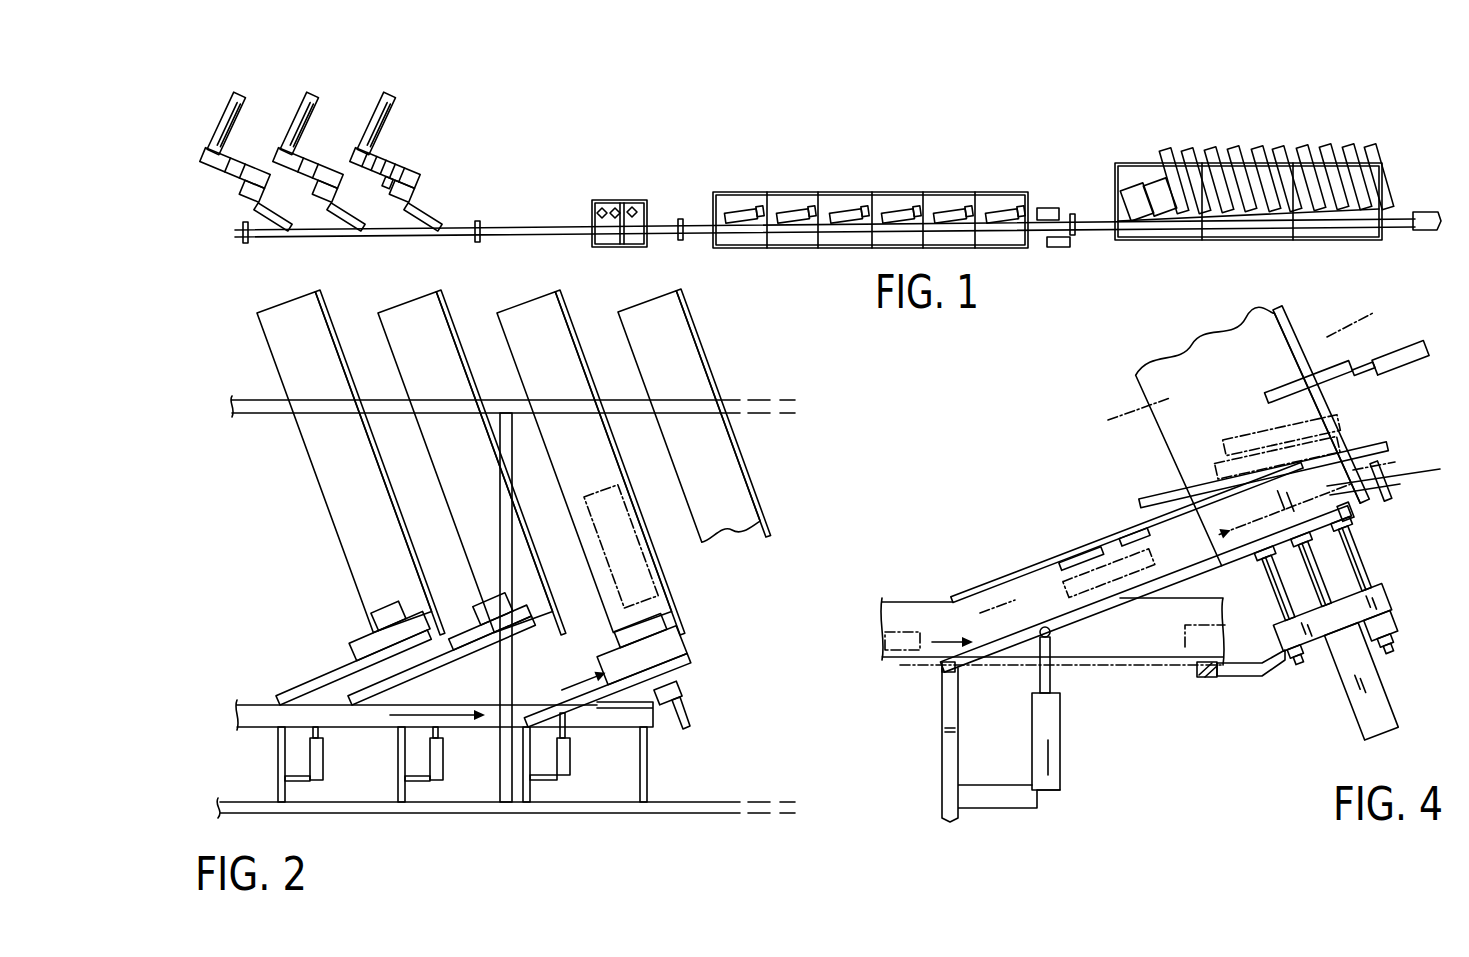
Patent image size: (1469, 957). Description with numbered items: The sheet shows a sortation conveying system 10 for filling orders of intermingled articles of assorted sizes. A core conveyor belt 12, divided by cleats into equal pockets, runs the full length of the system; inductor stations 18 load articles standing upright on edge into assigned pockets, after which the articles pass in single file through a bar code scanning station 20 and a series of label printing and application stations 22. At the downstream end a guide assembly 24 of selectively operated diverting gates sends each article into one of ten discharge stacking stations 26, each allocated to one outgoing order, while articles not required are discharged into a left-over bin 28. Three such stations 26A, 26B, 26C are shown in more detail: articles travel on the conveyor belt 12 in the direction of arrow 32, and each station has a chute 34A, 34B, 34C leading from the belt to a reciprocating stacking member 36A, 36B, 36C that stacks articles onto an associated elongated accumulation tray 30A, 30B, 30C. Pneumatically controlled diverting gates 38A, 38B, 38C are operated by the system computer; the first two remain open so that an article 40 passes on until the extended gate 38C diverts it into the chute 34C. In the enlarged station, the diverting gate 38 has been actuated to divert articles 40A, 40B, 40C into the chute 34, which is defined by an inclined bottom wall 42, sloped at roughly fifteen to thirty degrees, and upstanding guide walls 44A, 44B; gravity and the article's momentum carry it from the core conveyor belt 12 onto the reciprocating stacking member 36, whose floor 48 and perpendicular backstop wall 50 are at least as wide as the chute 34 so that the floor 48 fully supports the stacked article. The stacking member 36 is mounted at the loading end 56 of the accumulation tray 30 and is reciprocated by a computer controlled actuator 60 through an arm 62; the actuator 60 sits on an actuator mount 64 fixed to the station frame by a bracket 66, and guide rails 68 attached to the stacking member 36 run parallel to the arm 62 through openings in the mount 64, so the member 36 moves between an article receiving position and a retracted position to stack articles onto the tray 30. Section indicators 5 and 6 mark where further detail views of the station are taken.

In FIG. 4, the section line 5 is at (1003, 605).
In FIG. 4, the section line 6 is at (1111, 410).
In FIG. 1, the sortation conveying system 10 is at (542, 135).
In FIG. 1, the core conveyor belt 12 is at (536, 227).
In FIG. 2, the core conveyor belt 12 is at (255, 730).
In FIG. 4, the core conveyor belt 12 is at (880, 612).
In FIG. 1, the inductor stations 18 is at (207, 151).
In FIG. 1, the bar code scanning station 20 is at (620, 200).
In FIG. 1, the label printing and application stations 22 is at (849, 189).
In FIG. 1, the guide assembly 24 is at (1174, 233).
In FIG. 1, the discharge stacking stations 26 is at (1208, 147).
In FIG. 4, the discharge stacking stations 26 is at (1036, 431).
In FIG. 2, the discharge stacking station 26A is at (328, 680).
In FIG. 2, the discharge stacking station 26B is at (467, 663).
In FIG. 2, the discharge stacking station 26C is at (660, 597).
In FIG. 1, the left-over bin 28 is at (1122, 190).
In FIG. 4, the elongated accumulation tray 30 is at (1263, 327).
In FIG. 2, the elongated accumulation tray 30A is at (343, 533).
In FIG. 2, the elongated accumulation tray 30B is at (457, 518).
In FIG. 2, the elongated accumulation tray 30C is at (557, 480).
In FIG. 2, the arrow 32 is at (463, 727).
In FIG. 4, the chute 34 is at (1048, 589).
In FIG. 2, the chute 34A is at (367, 680).
In FIG. 2, the chute 34B is at (415, 657).
In FIG. 2, the chute 34C is at (603, 660).
In FIG. 4, the reciprocating stacking member 36 is at (1395, 478).
In FIG. 2, the reciprocating stacking member 36A is at (393, 647).
In FIG. 2, the reciprocating stacking member 36B is at (543, 655).
In FIG. 2, the reciprocating stacking member 36C is at (680, 647).
In FIG. 4, the diverting gate 38 is at (1077, 627).
In FIG. 2, the diverting gate 38A is at (347, 727).
In FIG. 2, the diverting gate 38B is at (452, 727).
In FIG. 2, the diverting gate 38C is at (587, 703).
In FIG. 2, the article 40 is at (687, 680).
In FIG. 4, the article 40A is at (905, 647).
In FIG. 4, the article 40B is at (1082, 560).
In FIG. 4, the end stop 40C is at (1375, 520).
In FIG. 4, the inclined bottom wall 42 is at (1132, 543).
In FIG. 4, the guide wall 44A is at (1048, 565).
In FIG. 4, the guide wall 44B is at (1147, 593).
In FIG. 4, the floor 48 is at (1218, 503).
In FIG. 4, the backstop wall 50 is at (1373, 503).
In FIG. 4, the loading end 56 is at (1409, 453).
In FIG. 4, the actuator 60 is at (1383, 717).
In FIG. 4, the arm 62 is at (1328, 578).
In FIG. 4, the actuator mount 64 is at (1390, 600).
In FIG. 4, the bracket 66 is at (1232, 673).
In FIG. 4, the guide rails 68 is at (1363, 557).